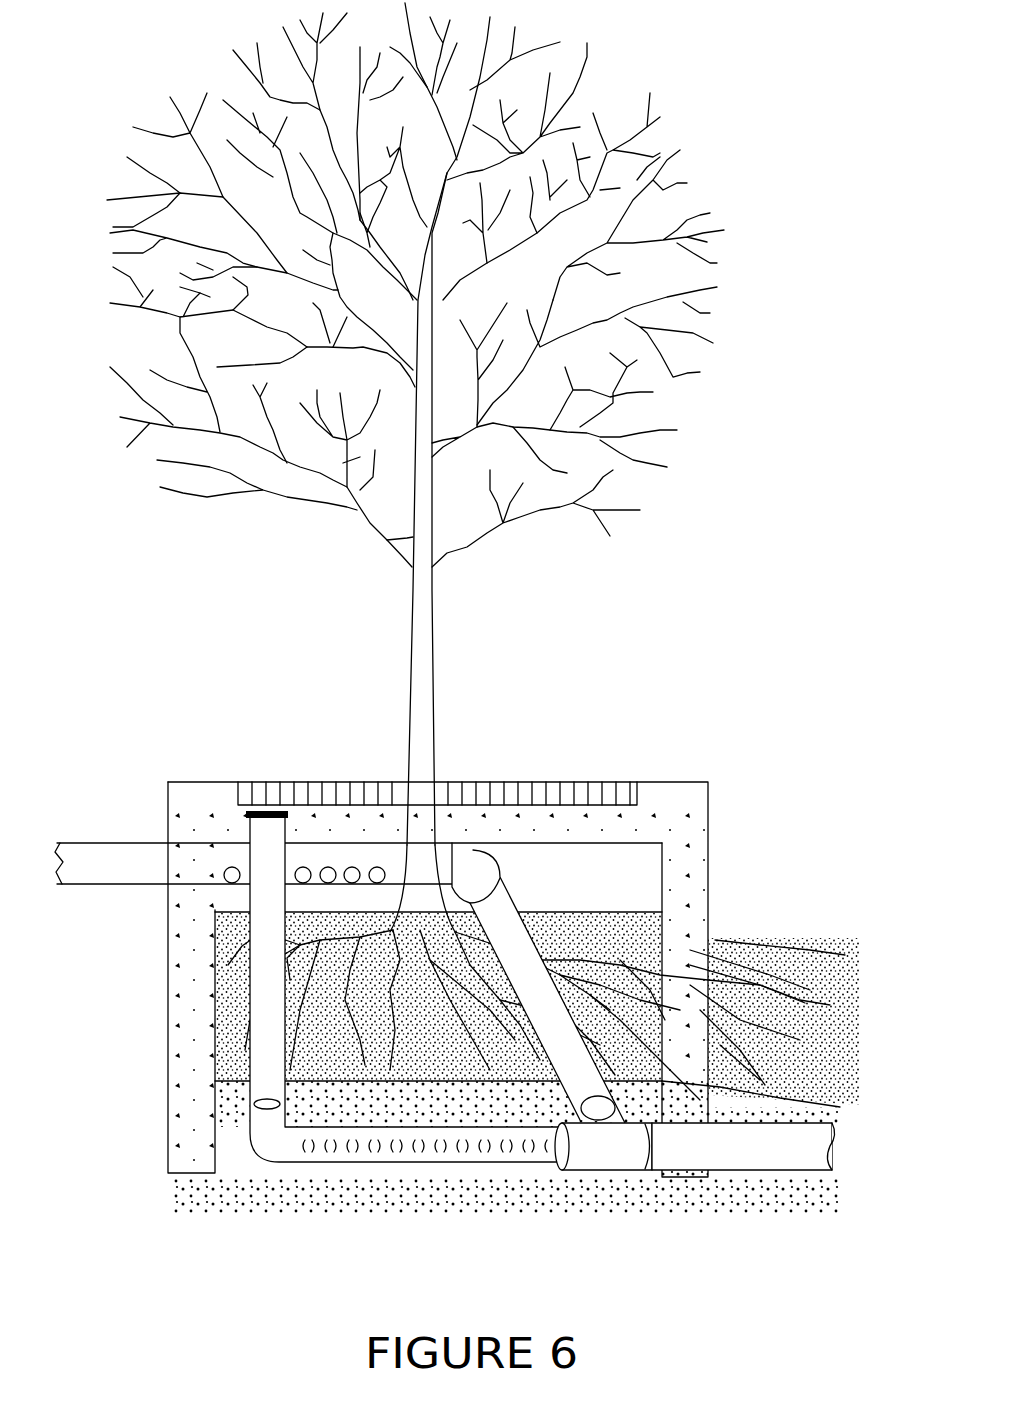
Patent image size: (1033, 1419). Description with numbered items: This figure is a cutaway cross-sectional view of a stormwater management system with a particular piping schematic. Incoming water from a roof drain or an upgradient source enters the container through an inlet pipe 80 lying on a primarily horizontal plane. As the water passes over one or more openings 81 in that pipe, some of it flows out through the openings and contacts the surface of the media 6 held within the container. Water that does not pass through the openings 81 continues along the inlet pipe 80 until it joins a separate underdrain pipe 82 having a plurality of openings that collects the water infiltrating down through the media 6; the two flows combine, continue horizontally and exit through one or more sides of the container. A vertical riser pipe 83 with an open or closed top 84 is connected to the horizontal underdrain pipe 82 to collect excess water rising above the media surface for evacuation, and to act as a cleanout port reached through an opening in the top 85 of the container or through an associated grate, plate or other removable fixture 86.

The media 6 is at (307, 1050).
The inlet pipe 80 is at (85, 862).
The openings 81 is at (327, 928).
The underdrain pipe 82 is at (393, 1157).
The vertical riser pipe 83 is at (270, 953).
The top 84 is at (270, 813).
The top of the container 85 is at (208, 808).
The grate, plate or other removable fixture 86 is at (530, 787).